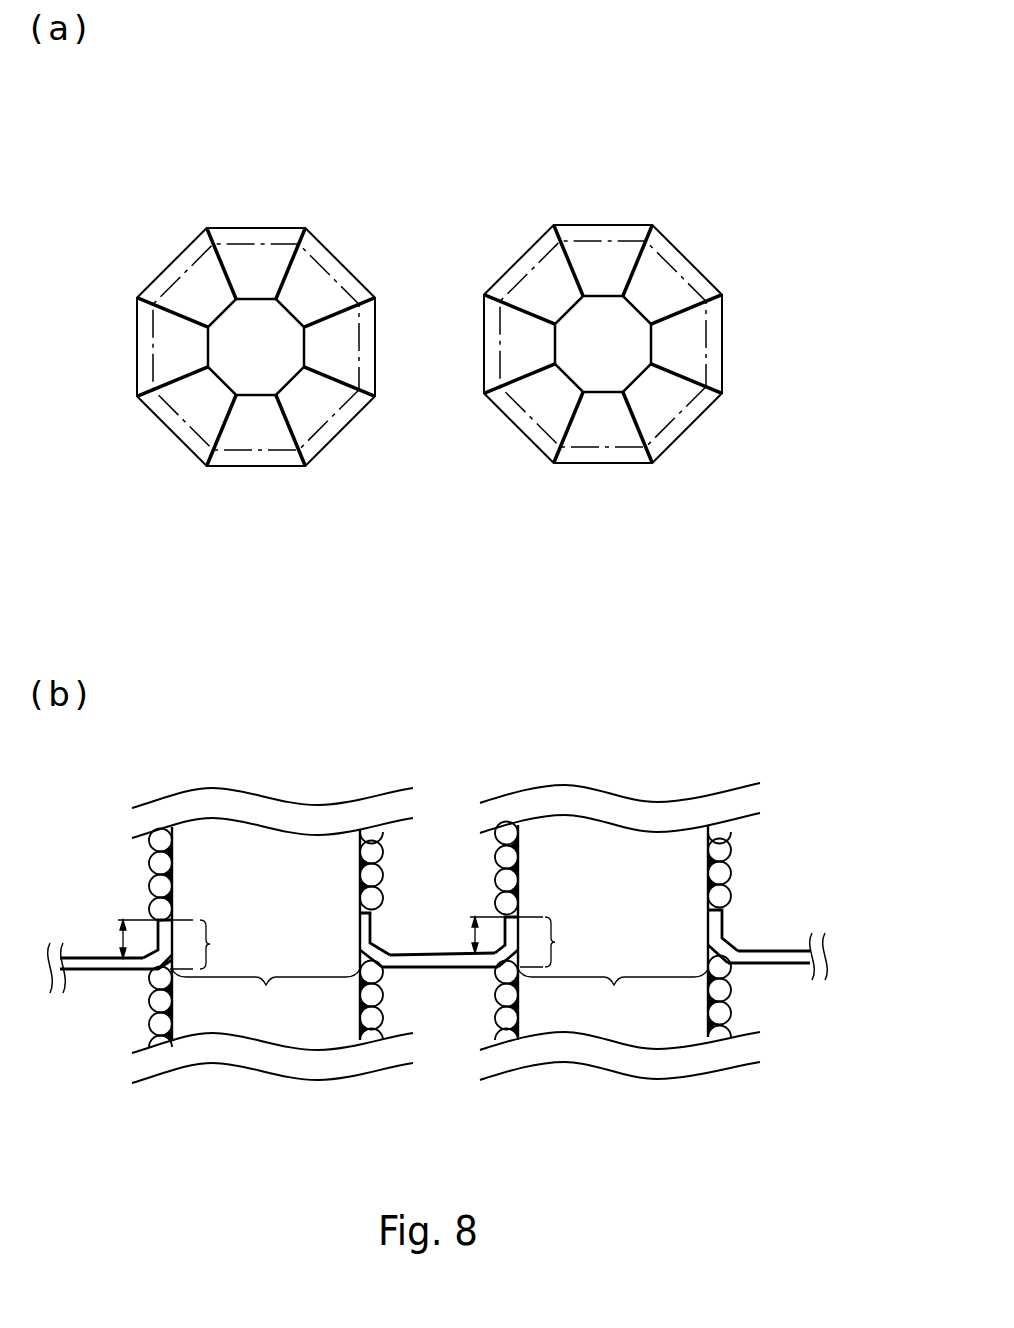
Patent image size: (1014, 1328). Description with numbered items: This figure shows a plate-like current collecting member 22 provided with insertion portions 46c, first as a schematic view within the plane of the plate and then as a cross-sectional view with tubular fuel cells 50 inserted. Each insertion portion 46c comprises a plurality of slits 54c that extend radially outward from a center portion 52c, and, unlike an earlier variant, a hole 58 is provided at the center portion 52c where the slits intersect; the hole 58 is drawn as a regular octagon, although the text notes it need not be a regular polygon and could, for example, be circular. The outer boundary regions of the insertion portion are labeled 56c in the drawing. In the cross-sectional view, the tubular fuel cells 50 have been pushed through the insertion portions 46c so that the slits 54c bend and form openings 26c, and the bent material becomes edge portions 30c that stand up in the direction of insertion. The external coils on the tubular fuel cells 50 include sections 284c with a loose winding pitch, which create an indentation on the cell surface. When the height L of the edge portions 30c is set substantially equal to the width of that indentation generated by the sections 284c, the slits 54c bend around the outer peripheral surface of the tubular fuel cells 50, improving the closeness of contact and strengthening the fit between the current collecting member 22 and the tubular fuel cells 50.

The insertion portion 46c is at (331, 175).
The hole 58 is at (250, 307).
The center portion 52c is at (262, 340).
The slit 54c is at (332, 377).
The outer frame portion 56c is at (240, 468).
The tubular fuel cell 50 is at (410, 848).
The edge portion 30c is at (375, 930).
The current collecting member 22 is at (102, 972).
The section with a loose winding pitch 284c is at (356, 943).
The opening 26c is at (440, 996).